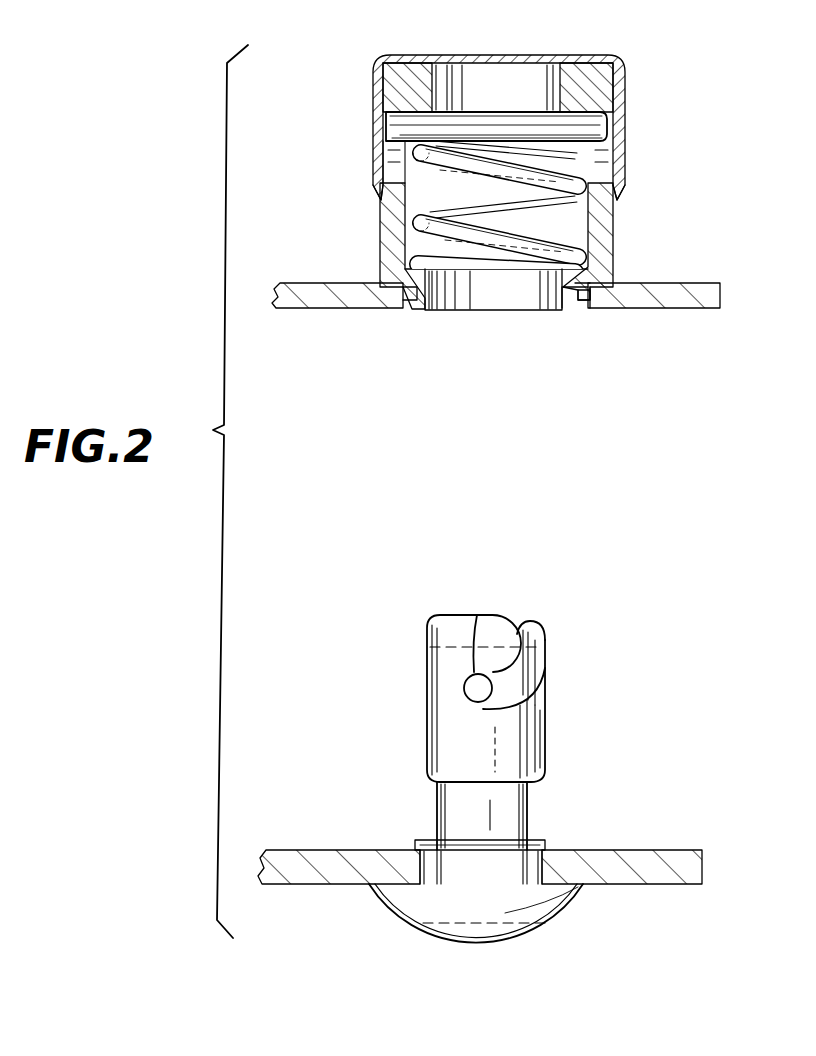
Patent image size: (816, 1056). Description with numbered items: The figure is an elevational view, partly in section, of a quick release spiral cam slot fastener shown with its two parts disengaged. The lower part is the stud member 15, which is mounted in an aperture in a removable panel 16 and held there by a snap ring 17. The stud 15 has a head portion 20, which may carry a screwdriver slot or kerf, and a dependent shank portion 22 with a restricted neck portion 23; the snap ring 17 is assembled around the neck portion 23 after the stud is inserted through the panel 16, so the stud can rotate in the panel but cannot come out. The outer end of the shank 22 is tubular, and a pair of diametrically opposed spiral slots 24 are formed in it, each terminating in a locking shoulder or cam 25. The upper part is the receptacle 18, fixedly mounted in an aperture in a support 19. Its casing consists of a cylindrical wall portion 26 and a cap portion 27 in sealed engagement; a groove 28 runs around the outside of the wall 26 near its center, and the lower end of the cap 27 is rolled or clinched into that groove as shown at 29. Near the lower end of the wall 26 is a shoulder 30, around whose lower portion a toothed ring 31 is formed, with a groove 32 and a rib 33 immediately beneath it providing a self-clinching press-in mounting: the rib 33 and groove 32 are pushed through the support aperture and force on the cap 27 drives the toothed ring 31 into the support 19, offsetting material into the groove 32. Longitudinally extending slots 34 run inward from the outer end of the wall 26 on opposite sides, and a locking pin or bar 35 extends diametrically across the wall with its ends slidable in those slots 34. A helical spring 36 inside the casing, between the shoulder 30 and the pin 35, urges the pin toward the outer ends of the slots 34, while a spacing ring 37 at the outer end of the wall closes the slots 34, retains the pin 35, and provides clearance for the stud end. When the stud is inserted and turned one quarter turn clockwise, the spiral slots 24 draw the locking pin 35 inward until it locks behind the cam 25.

The stud member 15 is at (556, 743).
The panel 16 is at (633, 863).
The snap ring 17 is at (547, 841).
The receptacle 18 is at (644, 178).
The support 19 is at (688, 306).
The head portion 20 is at (415, 907).
The shank portion 22 is at (443, 712).
The neck portion 23 is at (460, 802).
The spiral slots 24 is at (533, 668).
The locking shoulder or cam 25 is at (478, 620).
The cylindrical wall portion 26 is at (615, 243).
The cap portion 27 is at (560, 42).
The groove 28 is at (610, 205).
The rolled or clinched cap end 29 is at (375, 189).
The shoulder 30 is at (603, 287).
The toothed ring 31 is at (597, 310).
The groove 32 is at (420, 310).
The rib 33 is at (578, 312).
The longitudinally extending slots 34 is at (392, 145).
The locking pin or bar 35 is at (531, 92).
The helical spring 36 is at (511, 238).
The spacing ring 37 is at (406, 74).